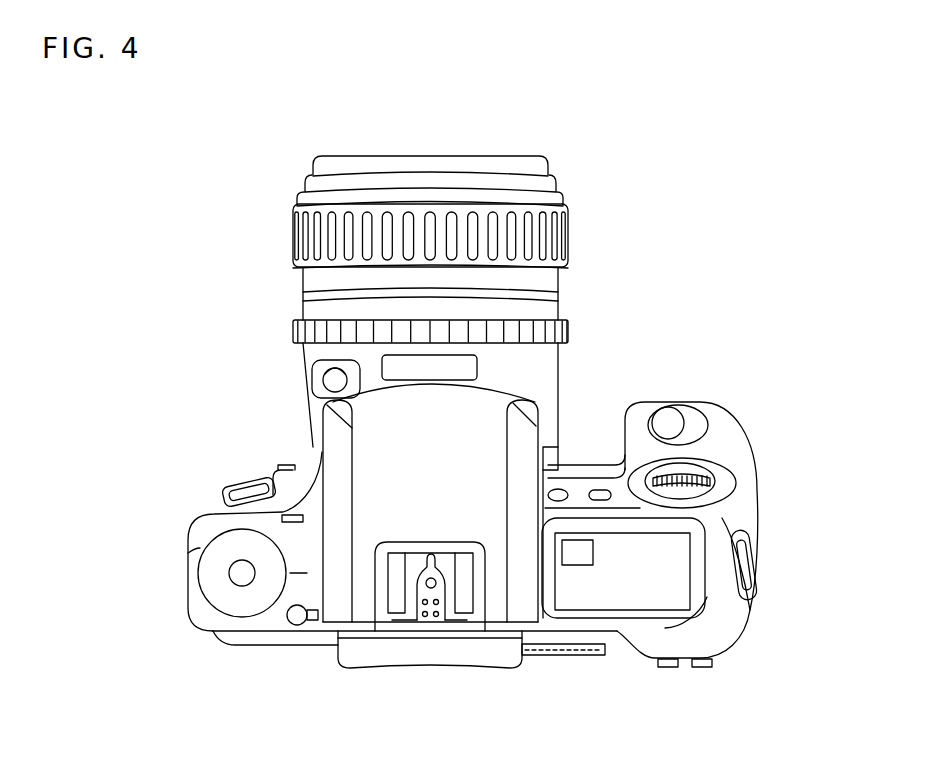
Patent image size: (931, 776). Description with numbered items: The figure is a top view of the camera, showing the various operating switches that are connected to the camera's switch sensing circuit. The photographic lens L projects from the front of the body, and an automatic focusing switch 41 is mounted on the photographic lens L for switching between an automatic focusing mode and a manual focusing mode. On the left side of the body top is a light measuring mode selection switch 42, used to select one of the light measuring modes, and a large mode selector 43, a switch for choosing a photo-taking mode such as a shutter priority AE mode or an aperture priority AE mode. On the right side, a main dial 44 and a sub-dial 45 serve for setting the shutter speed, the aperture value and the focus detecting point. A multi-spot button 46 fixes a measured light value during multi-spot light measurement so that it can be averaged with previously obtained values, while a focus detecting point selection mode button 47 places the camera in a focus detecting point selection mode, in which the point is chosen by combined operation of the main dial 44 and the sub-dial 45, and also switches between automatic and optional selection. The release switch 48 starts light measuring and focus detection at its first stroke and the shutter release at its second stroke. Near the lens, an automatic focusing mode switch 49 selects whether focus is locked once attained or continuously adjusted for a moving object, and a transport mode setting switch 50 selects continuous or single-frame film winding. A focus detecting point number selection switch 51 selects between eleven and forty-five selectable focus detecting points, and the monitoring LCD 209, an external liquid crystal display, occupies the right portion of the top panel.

The photographic lens L is at (498, 280).
The automatic focusing switch 41 is at (332, 364).
The light measuring mode selection switch 42 is at (240, 516).
The mode selector 43 is at (222, 596).
The main dial 44 is at (695, 472).
The sub-dial 45 is at (557, 655).
The multi-spot button 46 is at (702, 670).
The focus detecting point selection mode button 47 is at (672, 667).
The release switch 48 is at (667, 423).
The automatic focusing mode switch 49 is at (600, 490).
The transport mode setting switch 50 is at (560, 489).
The focus detecting point number selection switch 51 is at (292, 626).
The monitoring LCD 209 is at (673, 598).